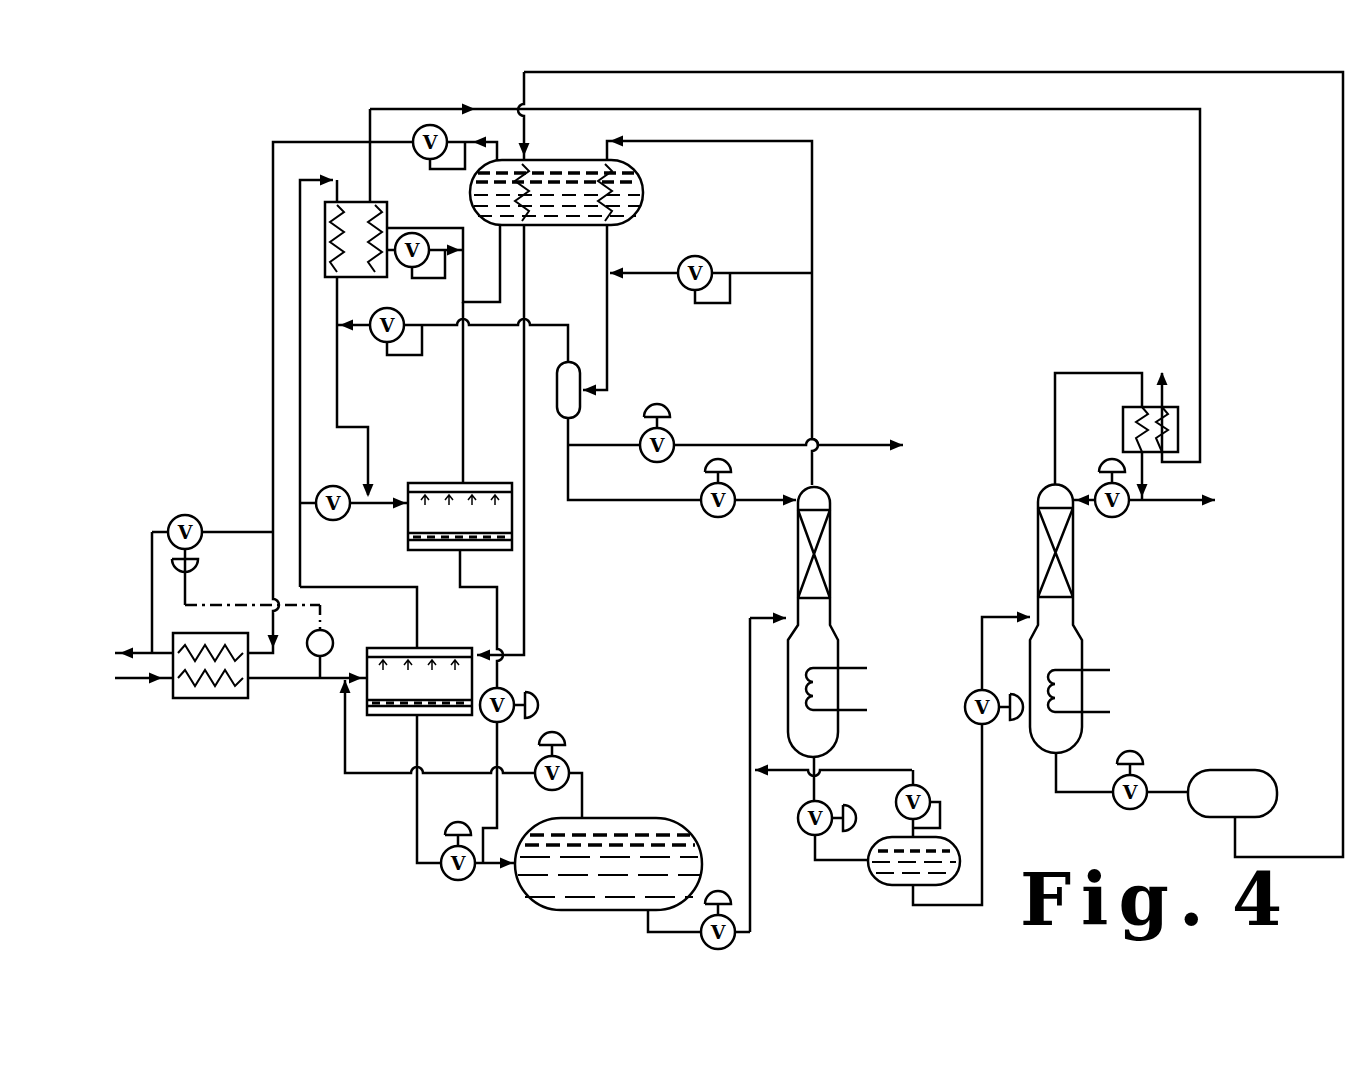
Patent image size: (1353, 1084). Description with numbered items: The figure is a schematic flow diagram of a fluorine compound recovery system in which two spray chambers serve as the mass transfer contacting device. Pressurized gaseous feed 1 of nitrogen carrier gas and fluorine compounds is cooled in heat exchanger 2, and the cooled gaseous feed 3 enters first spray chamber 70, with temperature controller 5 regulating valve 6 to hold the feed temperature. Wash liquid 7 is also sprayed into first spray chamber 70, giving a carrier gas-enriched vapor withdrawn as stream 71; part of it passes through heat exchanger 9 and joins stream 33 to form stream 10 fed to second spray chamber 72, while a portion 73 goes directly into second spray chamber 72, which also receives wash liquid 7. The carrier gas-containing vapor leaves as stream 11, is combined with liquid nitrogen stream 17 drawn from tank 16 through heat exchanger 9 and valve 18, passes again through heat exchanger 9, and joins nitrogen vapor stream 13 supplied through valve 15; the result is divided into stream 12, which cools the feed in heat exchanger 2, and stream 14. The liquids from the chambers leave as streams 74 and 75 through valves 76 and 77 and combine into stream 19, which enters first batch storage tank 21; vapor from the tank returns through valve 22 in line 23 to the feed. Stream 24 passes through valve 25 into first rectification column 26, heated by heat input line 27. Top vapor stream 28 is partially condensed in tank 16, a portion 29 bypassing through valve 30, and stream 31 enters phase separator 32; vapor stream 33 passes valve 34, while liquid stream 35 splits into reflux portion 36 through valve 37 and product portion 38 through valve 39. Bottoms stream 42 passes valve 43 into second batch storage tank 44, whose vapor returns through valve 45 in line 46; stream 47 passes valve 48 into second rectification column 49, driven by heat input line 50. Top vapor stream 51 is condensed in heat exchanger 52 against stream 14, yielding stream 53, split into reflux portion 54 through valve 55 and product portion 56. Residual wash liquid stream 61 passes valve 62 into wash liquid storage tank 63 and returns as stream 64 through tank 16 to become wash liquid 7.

The gaseous feed 1 is at (137, 683).
The heat exchanger 2 is at (200, 700).
The cooled gaseous feed 3 is at (285, 685).
The temperature controller 5 is at (333, 640).
The valve 6 is at (185, 515).
The wash liquid 7 is at (528, 632).
The heat exchanger 9 is at (325, 270).
The stream 10 is at (368, 465).
The stream 11 is at (463, 390).
The stream 12 is at (290, 142).
The nitrogen vapor stream 13 is at (392, 147).
The stream 14 is at (488, 102).
The valve 15 is at (402, 180).
The tank 16 is at (642, 182).
The nitrogen stream 17 is at (498, 236).
The valve 18 is at (405, 268).
The stream 19 is at (505, 877).
The first batch storage tank 21 is at (530, 910).
The valve 22 is at (570, 762).
The line 23 is at (387, 775).
The stream 24 is at (647, 923).
The valve 25 is at (732, 947).
The first rectification column 26 is at (831, 552).
The heat input line 27 is at (852, 670).
The stream 28 is at (815, 477).
The portion 29 is at (763, 277).
The valve 30 is at (680, 290).
The partially condensed stream 31 is at (607, 345).
The phase separator 32 is at (557, 395).
The stream 33 is at (548, 322).
The valve 34 is at (378, 341).
The stream 35 is at (572, 432).
The portion 36 is at (605, 503).
The valve 37 is at (707, 515).
The portion 38 is at (598, 445).
The valve 39 is at (672, 435).
The stream 42 is at (812, 765).
The valve 43 is at (802, 835).
The second batch storage tank 44 is at (900, 882).
The valve 45 is at (927, 788).
The line 46 is at (865, 770).
The stream 47 is at (983, 842).
The valve 48 is at (972, 690).
The second rectification column 49 is at (1090, 612).
The heat input line 50 is at (1093, 668).
The stream 51 is at (1052, 470).
The heat exchanger 52 is at (1122, 423).
The stream 53 is at (1140, 462).
The portion 54 is at (1133, 507).
The valve 55 is at (1107, 515).
The portion 56 is at (1173, 502).
The stream 61 is at (1053, 773).
The valve 62 is at (1142, 810).
The wash liquid storage tank 63 is at (1257, 767).
The stream 64 is at (1295, 855).
The first spray chamber 70 is at (430, 648).
The stream 71 is at (353, 587).
The second spray chamber 72 is at (402, 512).
The portion 73 is at (353, 512).
The stream 74 is at (418, 733).
The stream 75 is at (460, 577).
The valve 76 is at (443, 872).
The valve 77 is at (517, 685).